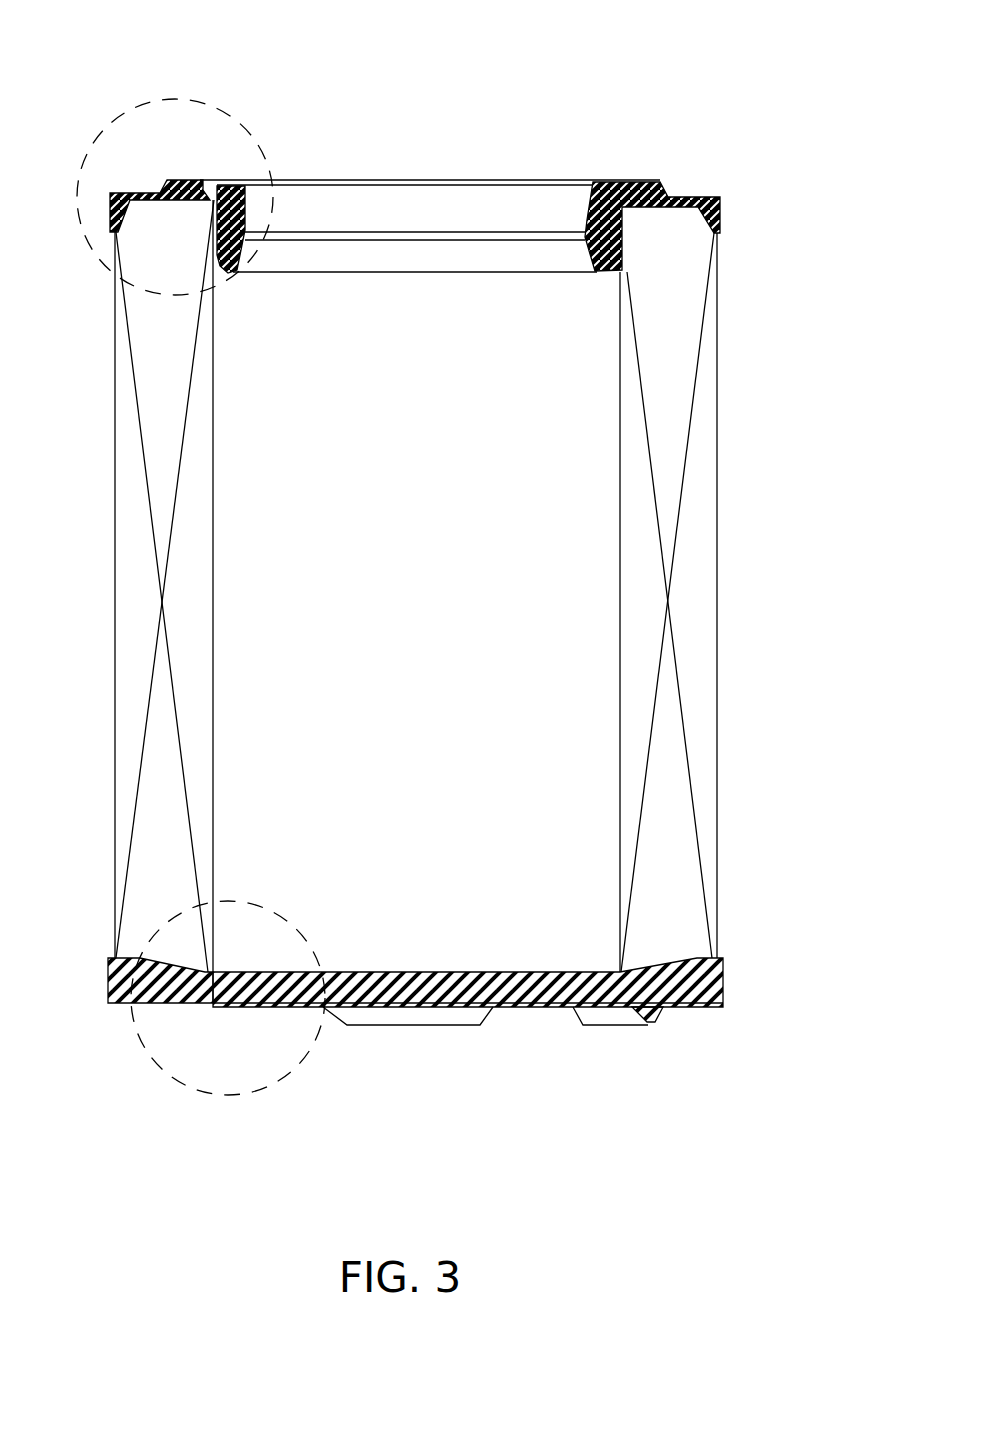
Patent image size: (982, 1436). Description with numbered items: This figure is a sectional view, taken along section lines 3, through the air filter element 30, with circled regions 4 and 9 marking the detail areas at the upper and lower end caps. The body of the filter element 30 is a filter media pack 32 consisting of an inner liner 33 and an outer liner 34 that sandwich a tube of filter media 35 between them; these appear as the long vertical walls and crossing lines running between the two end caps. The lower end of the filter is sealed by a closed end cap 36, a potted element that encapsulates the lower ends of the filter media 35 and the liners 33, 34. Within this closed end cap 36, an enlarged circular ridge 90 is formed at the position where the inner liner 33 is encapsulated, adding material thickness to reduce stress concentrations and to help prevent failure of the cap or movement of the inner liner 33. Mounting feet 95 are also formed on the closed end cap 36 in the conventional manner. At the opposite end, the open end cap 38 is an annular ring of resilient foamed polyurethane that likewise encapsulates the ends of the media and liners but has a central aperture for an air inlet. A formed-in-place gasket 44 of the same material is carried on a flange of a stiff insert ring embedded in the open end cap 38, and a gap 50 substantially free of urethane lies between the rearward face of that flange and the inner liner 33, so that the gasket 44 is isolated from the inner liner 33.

The air filter element 30 is at (345, 112).
The open end cap 38 is at (143, 193).
The formed-in-place gasket 44 is at (266, 180).
The detail circle (FIG. 4 region) 4 is at (79, 190).
The gap 50 is at (611, 280).
The section view indicator 3 is at (802, 382).
The outer liner 34 is at (710, 567).
The filter media 35 is at (687, 653).
The inner liner 33 is at (620, 742).
The filter media pack 32 is at (735, 831).
The detail circle (FIG. 9 region) 9 is at (148, 1050).
The enlarged circular ridge 90 is at (215, 1005).
The closed end cap 36 is at (518, 1007).
The mounting feet 95 is at (655, 1022).